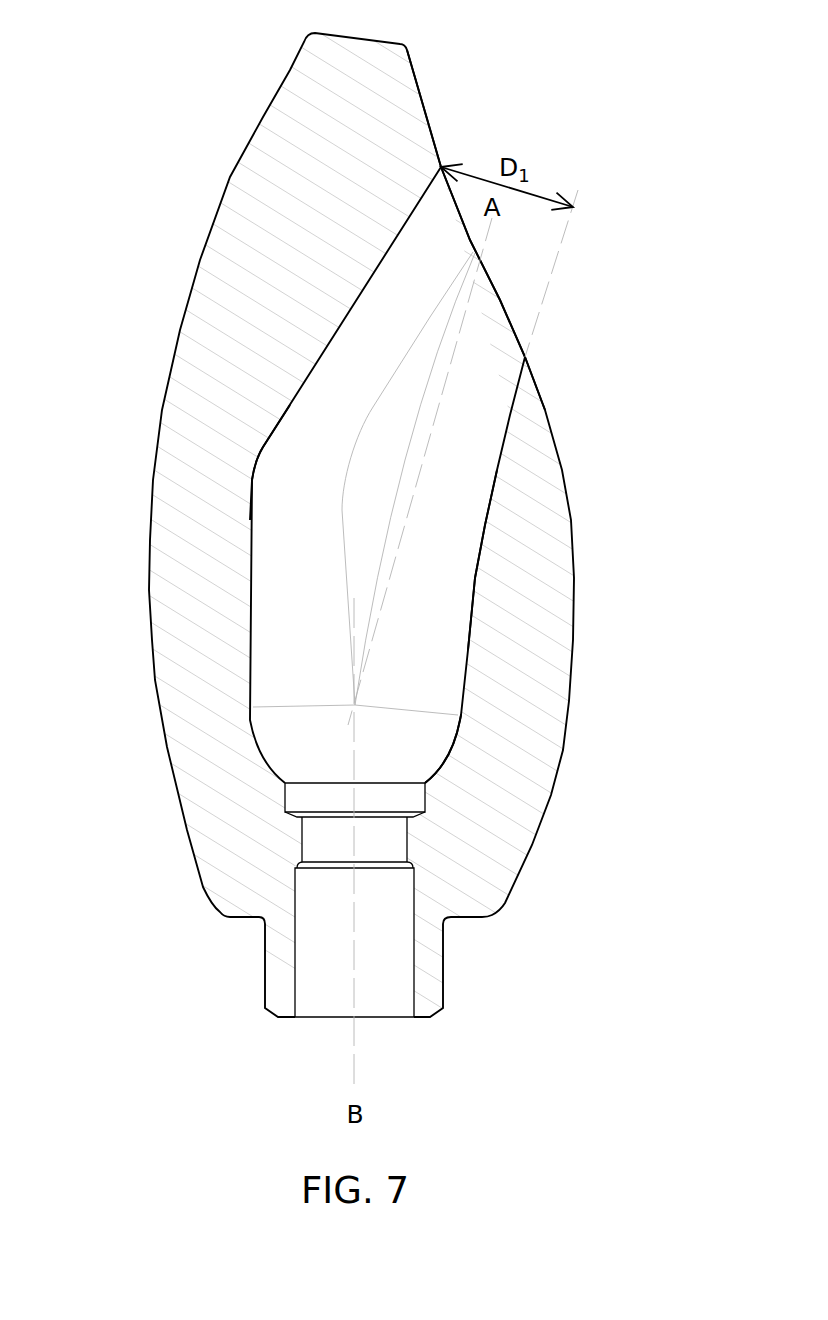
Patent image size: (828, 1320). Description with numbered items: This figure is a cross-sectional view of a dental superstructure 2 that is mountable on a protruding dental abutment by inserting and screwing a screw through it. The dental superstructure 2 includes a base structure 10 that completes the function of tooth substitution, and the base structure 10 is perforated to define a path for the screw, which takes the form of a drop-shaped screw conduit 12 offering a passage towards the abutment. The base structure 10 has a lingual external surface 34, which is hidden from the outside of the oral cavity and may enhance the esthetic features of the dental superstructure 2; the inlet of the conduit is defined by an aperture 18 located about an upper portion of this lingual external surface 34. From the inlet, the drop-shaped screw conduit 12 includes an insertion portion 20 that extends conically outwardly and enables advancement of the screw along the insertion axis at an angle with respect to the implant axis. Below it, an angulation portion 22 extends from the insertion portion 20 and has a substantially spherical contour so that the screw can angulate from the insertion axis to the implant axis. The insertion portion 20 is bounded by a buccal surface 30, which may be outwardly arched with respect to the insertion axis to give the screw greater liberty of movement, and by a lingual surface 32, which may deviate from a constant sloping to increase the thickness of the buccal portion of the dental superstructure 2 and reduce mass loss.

The dental superstructure 2 is at (190, 138).
The base structure 10 is at (569, 699).
The drop-shaped screw conduit 12 is at (500, 463).
The aperture 18 is at (512, 282).
The insertion portion 20 is at (397, 233).
The angulation portion 22 is at (449, 751).
The buccal surface 30 is at (255, 470).
The lingual surface 32 is at (475, 582).
The lingual external surface 34 is at (542, 393).